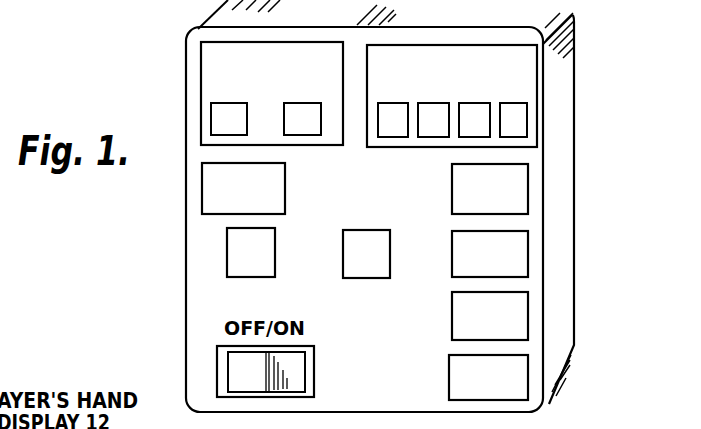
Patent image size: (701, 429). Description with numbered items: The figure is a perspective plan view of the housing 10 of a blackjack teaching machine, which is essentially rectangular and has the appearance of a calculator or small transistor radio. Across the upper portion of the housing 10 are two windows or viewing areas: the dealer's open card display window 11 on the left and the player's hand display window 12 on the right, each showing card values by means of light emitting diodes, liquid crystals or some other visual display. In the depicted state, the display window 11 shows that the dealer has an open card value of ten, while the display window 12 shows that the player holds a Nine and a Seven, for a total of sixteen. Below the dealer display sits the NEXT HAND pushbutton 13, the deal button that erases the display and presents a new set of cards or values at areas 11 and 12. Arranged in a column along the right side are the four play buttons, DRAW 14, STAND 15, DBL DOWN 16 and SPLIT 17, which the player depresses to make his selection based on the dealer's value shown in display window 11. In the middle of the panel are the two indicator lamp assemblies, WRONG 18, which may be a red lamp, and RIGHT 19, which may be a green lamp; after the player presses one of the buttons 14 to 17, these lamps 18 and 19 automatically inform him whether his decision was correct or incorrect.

The housing 10 is at (557, 133).
The dealer's open card display window 11 is at (204, 72).
The player's hand display window 12 is at (530, 90).
The NEXT HAND pushbutton 13 is at (205, 193).
The DRAW pushbutton 14 is at (517, 178).
The STAND pushbutton 15 is at (515, 243).
The DBL DOWN pushbutton 16 is at (517, 312).
The SPLIT pushbutton 17 is at (517, 387).
The WRONG indicator lamp assembly 18 is at (228, 248).
The RIGHT indicator lamp assembly 19 is at (358, 232).